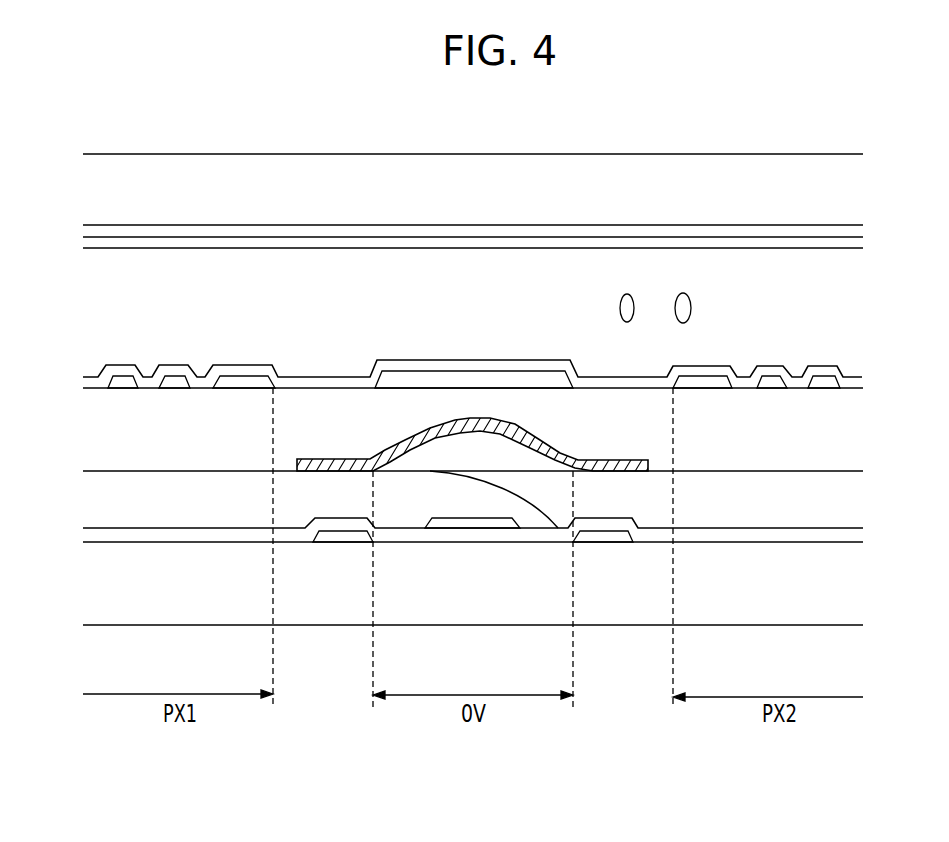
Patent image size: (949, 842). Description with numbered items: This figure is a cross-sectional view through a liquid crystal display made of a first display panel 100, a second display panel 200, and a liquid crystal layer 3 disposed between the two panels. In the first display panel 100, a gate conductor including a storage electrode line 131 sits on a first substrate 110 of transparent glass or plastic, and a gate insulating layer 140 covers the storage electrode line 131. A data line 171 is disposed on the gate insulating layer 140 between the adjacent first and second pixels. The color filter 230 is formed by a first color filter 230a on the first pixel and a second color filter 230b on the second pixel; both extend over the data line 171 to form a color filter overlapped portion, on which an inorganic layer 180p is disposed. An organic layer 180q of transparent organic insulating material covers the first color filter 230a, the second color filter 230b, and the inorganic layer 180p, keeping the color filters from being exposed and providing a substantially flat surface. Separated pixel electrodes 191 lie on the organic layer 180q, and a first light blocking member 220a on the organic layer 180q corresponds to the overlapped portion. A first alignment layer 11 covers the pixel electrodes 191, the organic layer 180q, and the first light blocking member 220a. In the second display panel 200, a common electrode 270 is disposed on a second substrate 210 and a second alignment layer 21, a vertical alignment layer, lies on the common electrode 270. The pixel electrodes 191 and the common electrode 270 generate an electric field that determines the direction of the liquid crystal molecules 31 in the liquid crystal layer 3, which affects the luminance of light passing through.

The second display panel 200 is at (500, 173).
The second substrate 210 is at (462, 172).
The common electrode 270 is at (550, 230).
The second alignment layer 21 is at (631, 245).
The liquid crystal layer 3 is at (490, 320).
The first alignment layer 11 is at (598, 385).
The pixel electrode 191 is at (241, 383).
The first light blocking member 220a is at (484, 385).
The liquid crystal molecule 31 is at (691, 308).
The first display panel 100 is at (500, 530).
The first substrate 110 is at (473, 642).
The storage electrode line 131 is at (337, 535).
The gate insulating layer 140 is at (237, 535).
The data line 171 is at (473, 525).
The inorganic layer 180p is at (617, 472).
The organic layer 180q is at (123, 438).
The color filter 230 is at (639, 728).
The first color filter 230a is at (186, 503).
The second color filter 230b is at (740, 508).